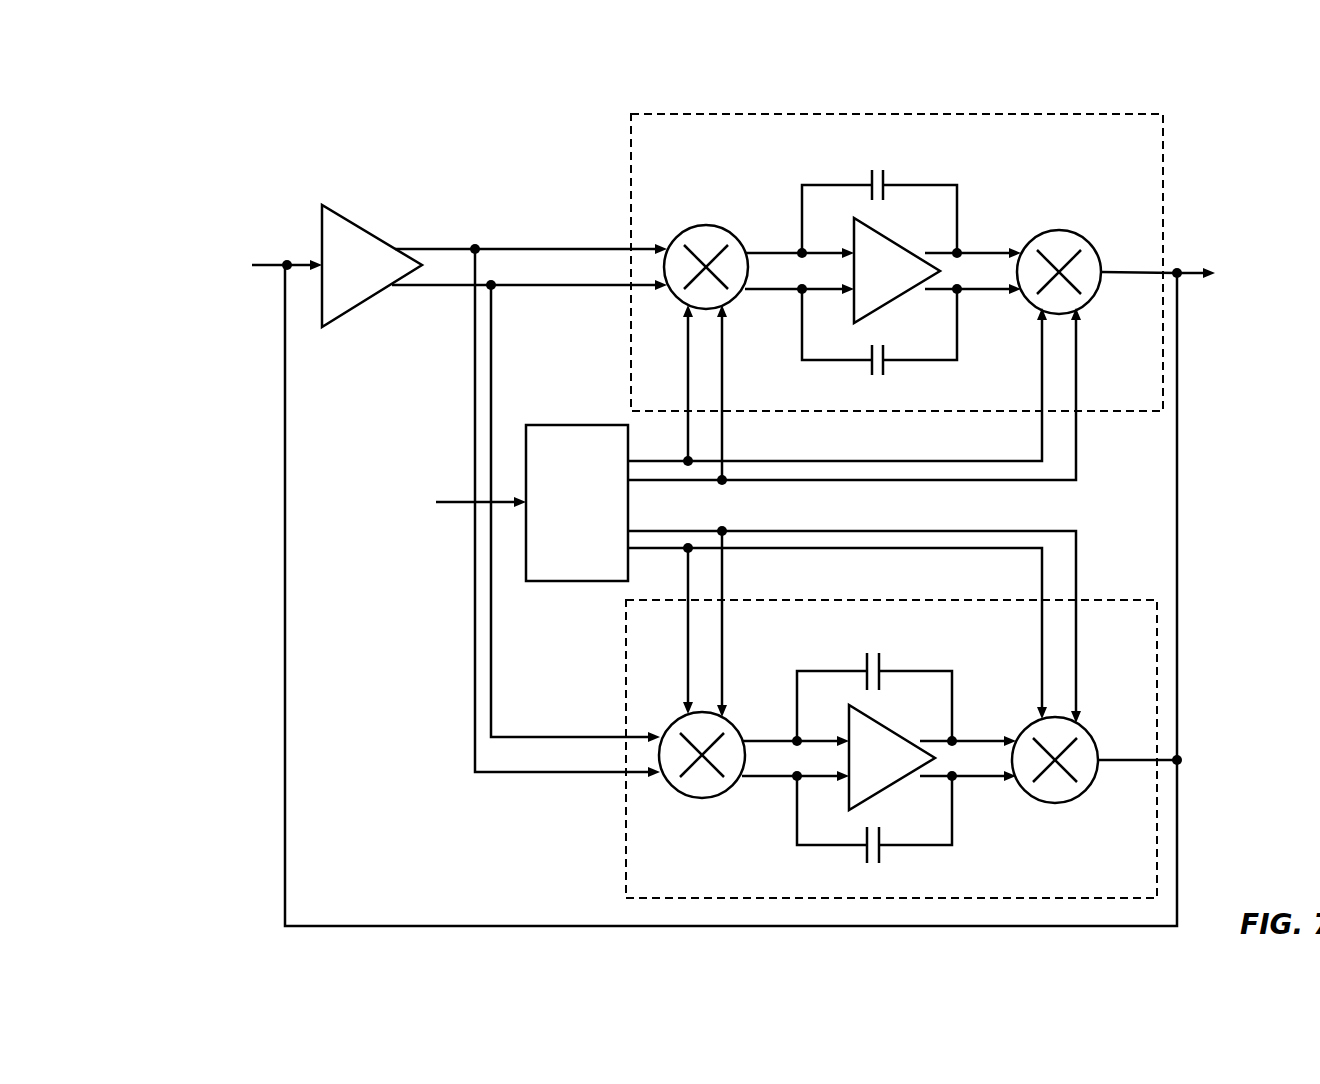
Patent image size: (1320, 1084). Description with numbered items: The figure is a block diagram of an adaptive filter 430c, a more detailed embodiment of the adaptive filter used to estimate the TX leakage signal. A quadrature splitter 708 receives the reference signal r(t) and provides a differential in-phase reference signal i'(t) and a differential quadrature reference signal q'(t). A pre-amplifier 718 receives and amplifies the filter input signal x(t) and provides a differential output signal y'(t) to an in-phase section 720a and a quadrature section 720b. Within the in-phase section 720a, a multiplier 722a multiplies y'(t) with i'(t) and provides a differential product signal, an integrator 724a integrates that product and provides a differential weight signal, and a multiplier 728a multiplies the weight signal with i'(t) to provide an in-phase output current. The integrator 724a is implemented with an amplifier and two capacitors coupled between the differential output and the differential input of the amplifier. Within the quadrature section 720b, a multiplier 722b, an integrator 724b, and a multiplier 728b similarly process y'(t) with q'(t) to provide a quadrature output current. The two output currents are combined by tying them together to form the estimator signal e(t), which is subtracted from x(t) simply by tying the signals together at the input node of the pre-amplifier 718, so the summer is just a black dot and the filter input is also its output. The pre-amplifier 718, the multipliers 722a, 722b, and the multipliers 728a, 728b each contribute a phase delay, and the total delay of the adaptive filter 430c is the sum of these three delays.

The adaptive filter 430c is at (745, 493).
The pre-amplifier 718 is at (381, 218).
The quadrature splitter 708 is at (572, 425).
The in-phase section 720a is at (880, 113).
The quadrature section 720b is at (873, 599).
The multiplier 722a is at (716, 213).
The multiplier 722b is at (709, 799).
The integrator 724a is at (886, 253).
The integrator 724b is at (882, 739).
The multiplier 728a is at (1094, 300).
The multiplier 728b is at (1092, 790).